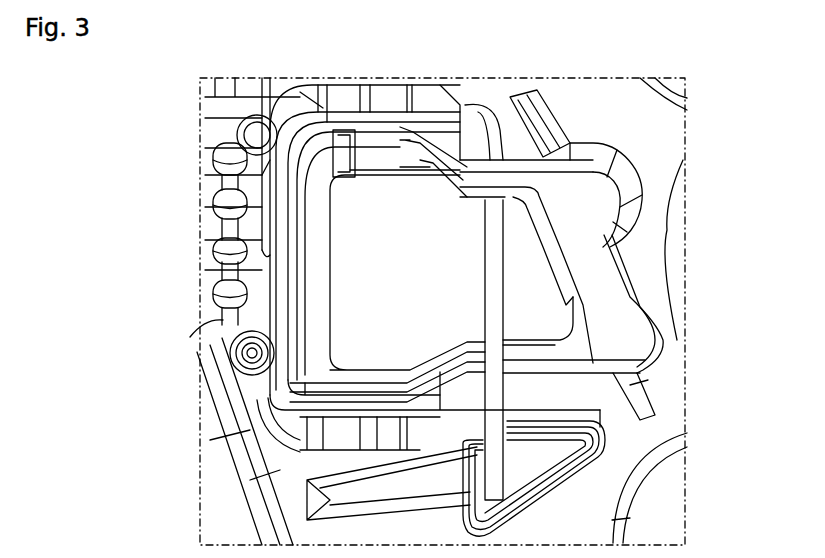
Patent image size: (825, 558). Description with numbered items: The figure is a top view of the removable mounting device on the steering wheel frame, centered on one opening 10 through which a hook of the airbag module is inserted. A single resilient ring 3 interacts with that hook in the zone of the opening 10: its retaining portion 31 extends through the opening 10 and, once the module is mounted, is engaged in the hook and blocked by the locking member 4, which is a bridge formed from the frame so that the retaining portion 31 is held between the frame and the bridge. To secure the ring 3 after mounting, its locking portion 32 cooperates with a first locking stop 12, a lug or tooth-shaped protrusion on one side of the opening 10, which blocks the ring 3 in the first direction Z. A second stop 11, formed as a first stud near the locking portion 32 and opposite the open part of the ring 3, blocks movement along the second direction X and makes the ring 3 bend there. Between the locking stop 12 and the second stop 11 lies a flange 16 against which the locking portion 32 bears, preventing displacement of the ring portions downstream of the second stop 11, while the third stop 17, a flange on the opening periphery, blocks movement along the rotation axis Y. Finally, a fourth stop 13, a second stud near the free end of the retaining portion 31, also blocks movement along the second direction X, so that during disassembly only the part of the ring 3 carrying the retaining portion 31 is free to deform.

The resilient ring 3 is at (265, 161).
The locking member 4 is at (617, 347).
The opening 10 is at (353, 330).
The second stop 11 is at (258, 126).
The first locking stop 12 is at (270, 273).
The fourth stop 13 is at (507, 480).
The flange 16 is at (262, 192).
The third stop 17 is at (330, 405).
The retaining portion 31 is at (490, 320).
The locking portion 32 is at (240, 207).